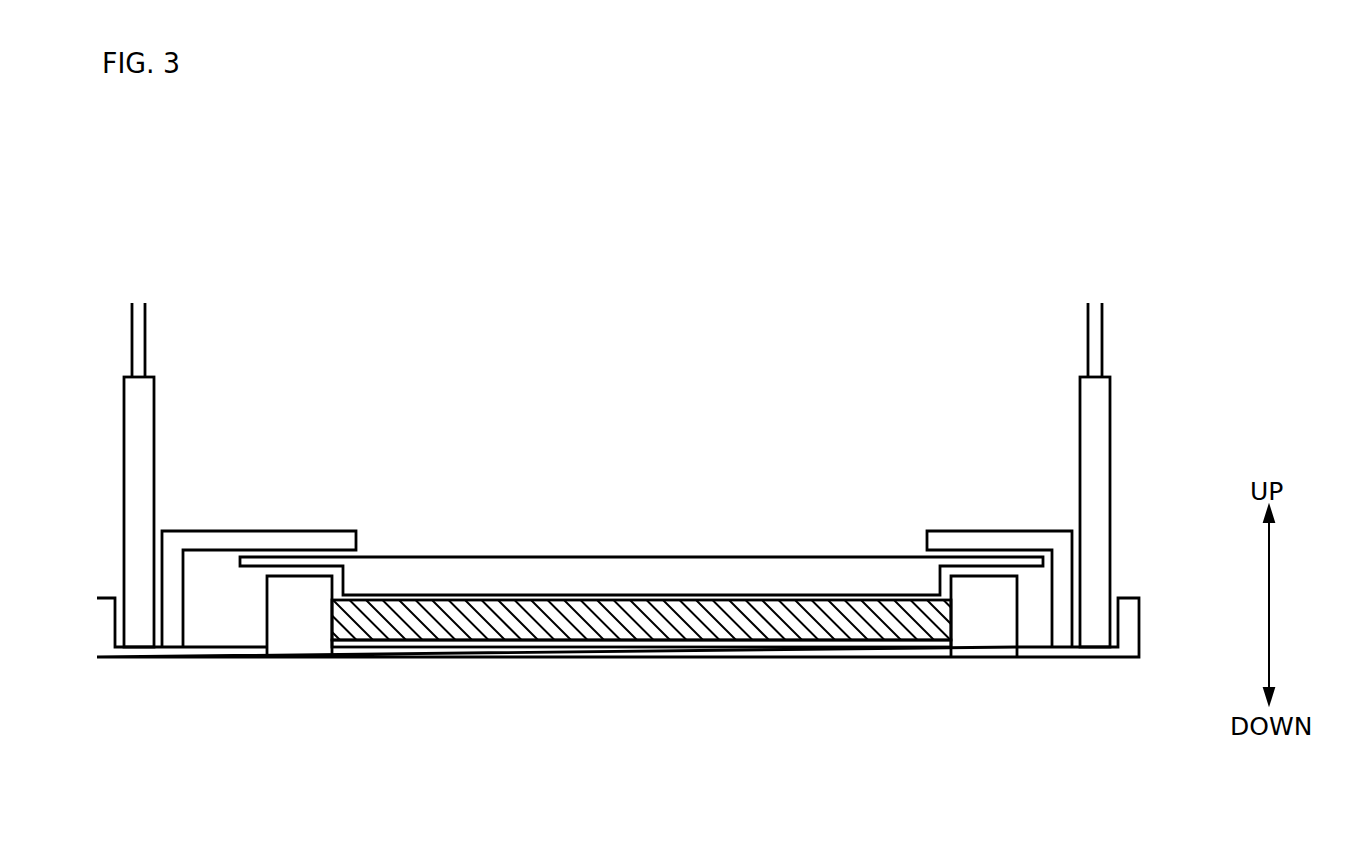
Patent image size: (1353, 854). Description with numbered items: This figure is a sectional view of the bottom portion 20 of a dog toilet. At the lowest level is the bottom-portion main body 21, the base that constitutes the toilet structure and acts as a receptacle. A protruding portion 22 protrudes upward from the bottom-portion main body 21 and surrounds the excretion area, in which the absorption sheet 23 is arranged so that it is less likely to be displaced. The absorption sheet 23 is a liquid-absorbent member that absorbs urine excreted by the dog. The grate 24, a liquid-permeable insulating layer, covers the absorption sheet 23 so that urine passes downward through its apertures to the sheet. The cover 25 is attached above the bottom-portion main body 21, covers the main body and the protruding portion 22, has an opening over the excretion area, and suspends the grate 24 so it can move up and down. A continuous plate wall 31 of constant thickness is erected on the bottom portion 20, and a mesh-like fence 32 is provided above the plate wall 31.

The bottom portion 20 is at (643, 456).
The bottom-portion main body 21 is at (521, 653).
The protruding portion 22 is at (277, 612).
The absorption sheet 23 is at (698, 631).
The grate 24 is at (840, 567).
The cover 25 is at (261, 530).
The plate wall 31 is at (1110, 511).
The fence 32 is at (1102, 343).